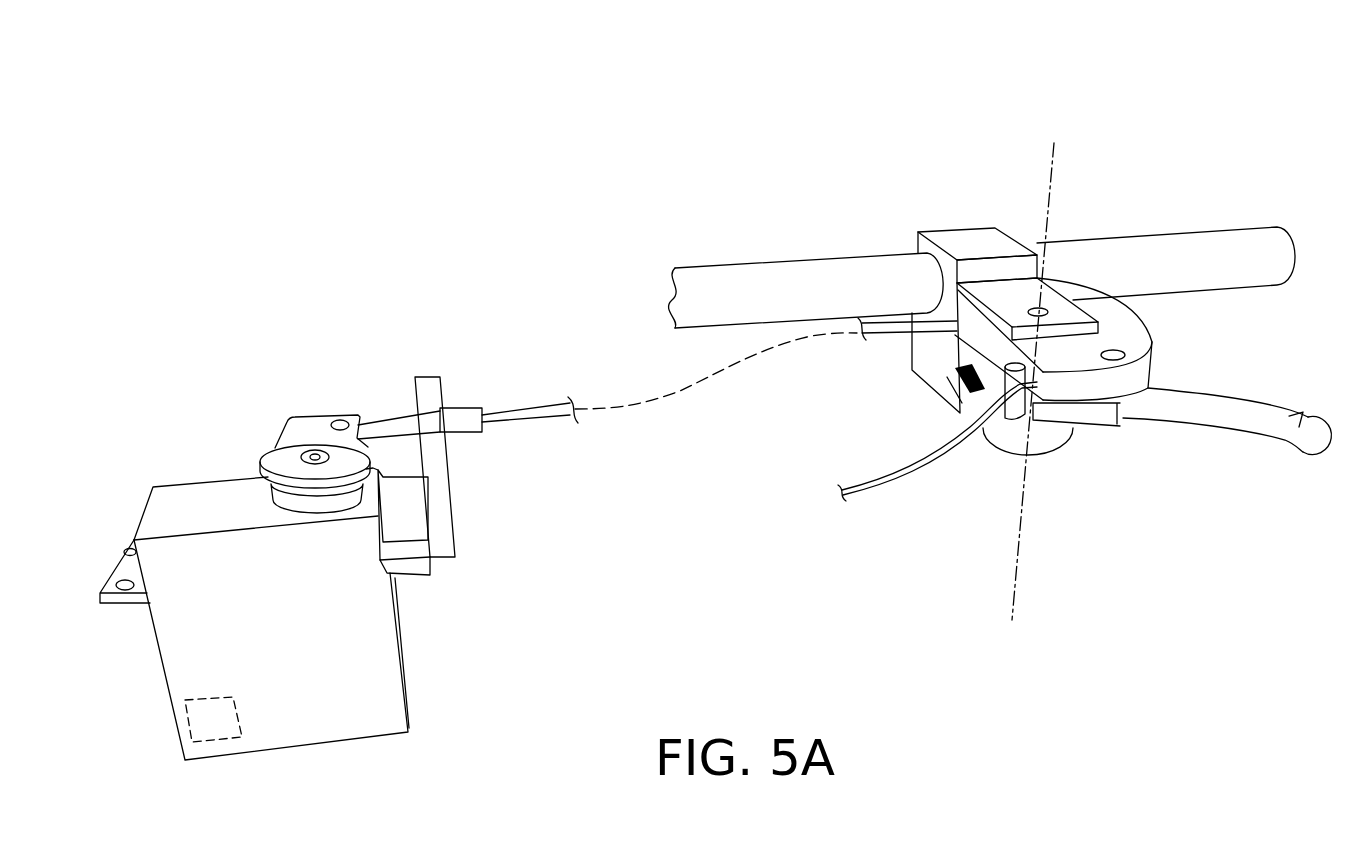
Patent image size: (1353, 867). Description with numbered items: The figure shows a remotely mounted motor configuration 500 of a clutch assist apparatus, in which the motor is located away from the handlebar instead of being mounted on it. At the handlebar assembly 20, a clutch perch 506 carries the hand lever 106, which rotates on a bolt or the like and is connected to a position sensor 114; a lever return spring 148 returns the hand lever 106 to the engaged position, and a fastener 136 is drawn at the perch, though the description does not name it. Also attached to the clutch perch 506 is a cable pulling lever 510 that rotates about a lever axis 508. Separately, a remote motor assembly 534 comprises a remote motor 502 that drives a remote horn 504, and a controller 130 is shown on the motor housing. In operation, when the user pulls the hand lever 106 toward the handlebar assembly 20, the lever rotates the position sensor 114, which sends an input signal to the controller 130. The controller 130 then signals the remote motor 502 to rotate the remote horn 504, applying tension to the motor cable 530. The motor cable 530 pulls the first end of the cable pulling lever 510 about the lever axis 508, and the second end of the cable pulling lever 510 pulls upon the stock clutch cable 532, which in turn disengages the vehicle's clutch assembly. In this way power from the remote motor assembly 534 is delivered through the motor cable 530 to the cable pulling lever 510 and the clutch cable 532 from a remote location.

The remotely mounted motor configuration 500 is at (1152, 102).
The remote motor assembly 534 is at (196, 432).
The remote motor 502 is at (367, 723).
The controller 130 is at (235, 735).
The remote horn 504 is at (303, 425).
The motor cable 530 is at (523, 420).
The handlebar assembly 20 is at (1247, 237).
The clutch perch 506 is at (958, 233).
The lever axis 508 is at (1047, 214).
The cable pulling lever 510 is at (1147, 368).
The hand lever 106 is at (1313, 450).
The position sensor 114 is at (1057, 447).
The screw 136 is at (1010, 412).
The lever return spring 148 is at (963, 387).
The stock clutch cable 532 is at (888, 483).